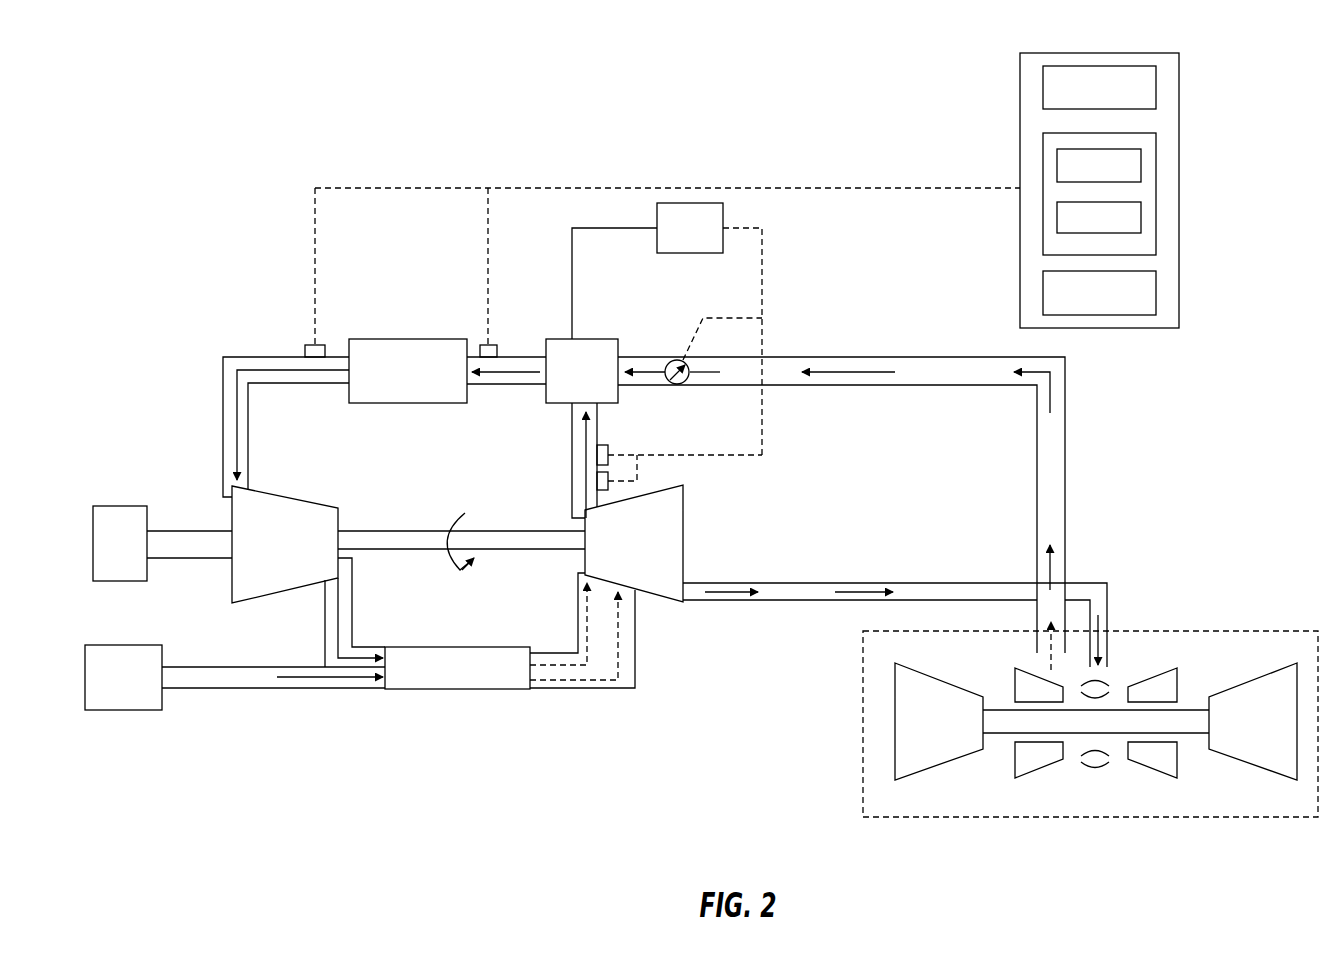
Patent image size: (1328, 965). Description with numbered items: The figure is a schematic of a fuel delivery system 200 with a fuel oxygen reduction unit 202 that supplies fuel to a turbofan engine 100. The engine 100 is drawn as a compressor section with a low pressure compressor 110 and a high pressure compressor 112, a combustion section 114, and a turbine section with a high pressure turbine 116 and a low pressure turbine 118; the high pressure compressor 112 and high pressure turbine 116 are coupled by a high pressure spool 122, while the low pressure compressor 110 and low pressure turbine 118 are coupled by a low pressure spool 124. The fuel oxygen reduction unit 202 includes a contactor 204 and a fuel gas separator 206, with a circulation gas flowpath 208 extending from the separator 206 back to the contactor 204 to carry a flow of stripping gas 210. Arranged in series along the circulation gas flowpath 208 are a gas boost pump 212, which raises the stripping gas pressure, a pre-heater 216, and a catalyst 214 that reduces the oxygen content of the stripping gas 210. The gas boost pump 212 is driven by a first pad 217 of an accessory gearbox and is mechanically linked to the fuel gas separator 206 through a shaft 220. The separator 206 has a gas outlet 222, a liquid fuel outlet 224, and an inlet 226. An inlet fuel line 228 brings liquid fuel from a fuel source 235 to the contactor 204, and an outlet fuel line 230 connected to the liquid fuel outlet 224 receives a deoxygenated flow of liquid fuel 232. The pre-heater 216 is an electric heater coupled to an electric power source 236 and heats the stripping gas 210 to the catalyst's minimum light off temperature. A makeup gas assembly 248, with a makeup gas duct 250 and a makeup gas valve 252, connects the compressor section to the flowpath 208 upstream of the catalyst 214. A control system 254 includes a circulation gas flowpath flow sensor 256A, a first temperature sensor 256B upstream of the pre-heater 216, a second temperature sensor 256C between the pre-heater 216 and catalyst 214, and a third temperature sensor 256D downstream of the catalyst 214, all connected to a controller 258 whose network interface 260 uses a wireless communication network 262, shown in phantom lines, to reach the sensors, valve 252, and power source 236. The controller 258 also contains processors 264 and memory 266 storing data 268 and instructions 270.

The turbofan engine 100 is at (1217, 608).
The low pressure compressor 110 is at (939, 721).
The high pressure compressor 112 is at (1050, 777).
The combustion section 114 is at (1105, 775).
The high pressure turbine 116 is at (1165, 775).
The low pressure turbine 118 is at (1253, 721).
The high pressure spool 122 is at (1118, 700).
The low pressure spool 124 is at (1010, 722).
The fuel delivery system 200 is at (228, 138).
The fuel oxygen reduction unit 202 is at (185, 295).
The contactor 204 is at (455, 647).
The fuel gas separator 206 is at (670, 540).
The circulation gas flowpath 208 is at (250, 352).
The stripping gas 210 is at (228, 432).
The gas boost pump 212 is at (300, 498).
The catalyst 214 is at (405, 339).
The pre-heater 216 is at (585, 339).
The first pad of accessory gearbox 217 is at (120, 525).
The shaft 220 is at (392, 531).
The gas outlet 222 is at (574, 510).
The liquid fuel outlet 224 is at (690, 607).
The inlet 226 is at (592, 592).
The inlet fuel line 228 is at (290, 690).
The outlet fuel line 230 is at (805, 583).
The deoxygenated flow of liquid fuel 232 is at (350, 680).
The fuel source 235 is at (123, 677).
The electric power source 236 is at (647, 271).
The makeup gas assembly 248 is at (920, 322).
The makeup gas duct 250 is at (875, 385).
The makeup gas valve 252 is at (678, 345).
The control system 254 is at (910, 117).
The circulation gas flowpath flow sensor 256A is at (608, 481).
The first temperature sensor 256B is at (605, 445).
The second temperature sensor 256C is at (490, 345).
The third temperature sensor 256D is at (322, 345).
The controller 258 is at (1115, 53).
The network interface 260 is at (1099, 293).
The wireless communication network 262 is at (790, 188).
The processors 264 is at (1099, 87).
The memory 266 is at (1156, 150).
The data 268 is at (1141, 165).
The instructions 270 is at (1141, 217).